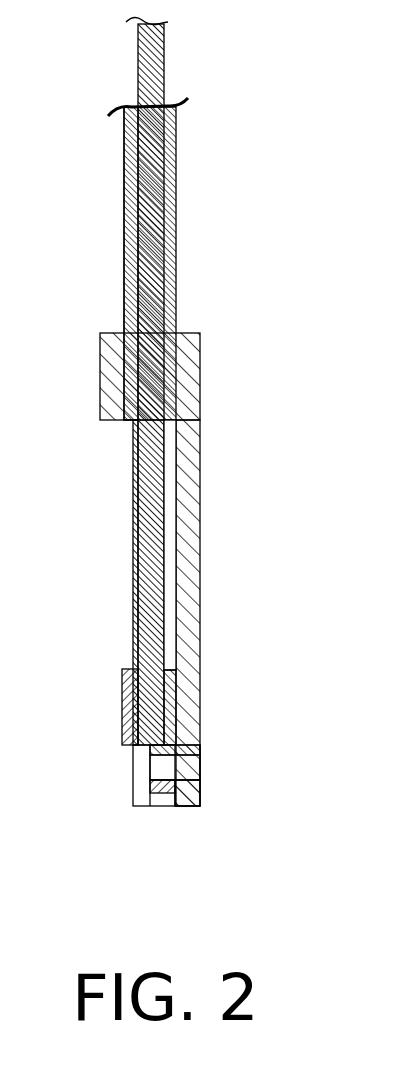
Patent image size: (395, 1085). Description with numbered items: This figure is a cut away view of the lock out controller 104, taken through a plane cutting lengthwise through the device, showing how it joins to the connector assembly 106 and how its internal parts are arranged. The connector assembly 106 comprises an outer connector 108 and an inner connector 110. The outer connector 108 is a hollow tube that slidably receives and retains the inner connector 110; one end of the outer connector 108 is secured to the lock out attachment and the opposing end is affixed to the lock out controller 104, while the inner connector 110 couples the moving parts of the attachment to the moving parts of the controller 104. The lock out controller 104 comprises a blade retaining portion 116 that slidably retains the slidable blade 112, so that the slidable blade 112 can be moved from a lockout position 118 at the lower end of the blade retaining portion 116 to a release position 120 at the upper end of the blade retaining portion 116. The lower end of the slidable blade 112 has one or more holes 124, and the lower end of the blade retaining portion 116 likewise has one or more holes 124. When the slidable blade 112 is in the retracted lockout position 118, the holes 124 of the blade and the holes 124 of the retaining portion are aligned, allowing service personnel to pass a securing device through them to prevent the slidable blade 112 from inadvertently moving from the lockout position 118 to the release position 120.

The lock out controller 104 is at (237, 573).
The connector assembly 106 is at (193, 192).
The outer connector 108 is at (134, 238).
The inner connector 110 is at (165, 70).
The slidable blade 112 is at (122, 707).
The blade retaining portion 116 is at (200, 680).
The lockout position 118 is at (120, 790).
The release position 120 is at (208, 455).
The holes 124 is at (205, 767).